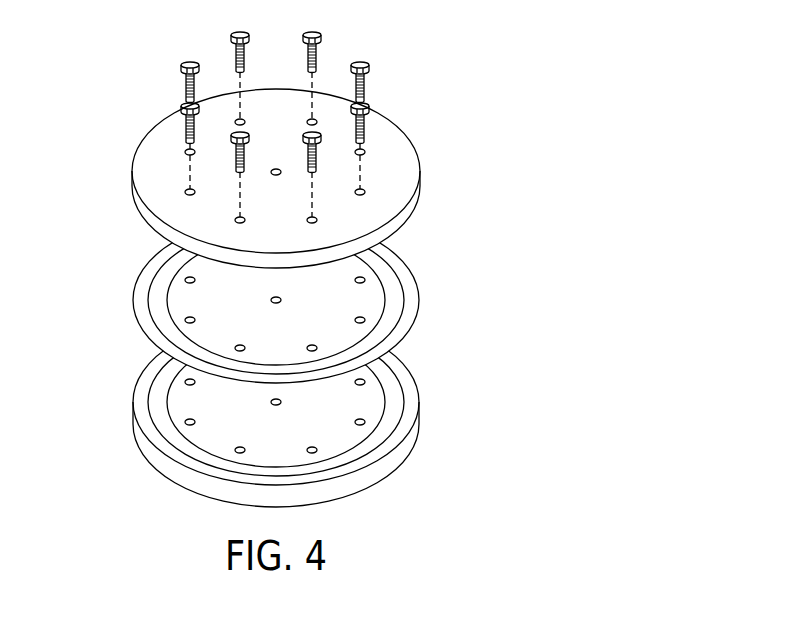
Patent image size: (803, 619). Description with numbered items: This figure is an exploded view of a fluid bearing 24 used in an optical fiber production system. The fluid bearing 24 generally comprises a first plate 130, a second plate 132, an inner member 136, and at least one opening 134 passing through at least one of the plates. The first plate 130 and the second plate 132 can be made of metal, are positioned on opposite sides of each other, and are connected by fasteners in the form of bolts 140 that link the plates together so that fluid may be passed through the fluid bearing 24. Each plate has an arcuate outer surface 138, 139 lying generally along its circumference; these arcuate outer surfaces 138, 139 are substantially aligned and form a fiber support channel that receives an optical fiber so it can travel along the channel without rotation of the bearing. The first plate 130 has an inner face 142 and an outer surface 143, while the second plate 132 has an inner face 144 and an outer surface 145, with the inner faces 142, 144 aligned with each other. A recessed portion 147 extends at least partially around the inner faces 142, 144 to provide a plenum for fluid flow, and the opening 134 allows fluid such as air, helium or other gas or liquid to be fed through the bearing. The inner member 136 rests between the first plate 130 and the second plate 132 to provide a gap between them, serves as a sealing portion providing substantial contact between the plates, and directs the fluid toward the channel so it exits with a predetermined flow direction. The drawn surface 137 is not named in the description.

The fluid bearing 24 is at (518, 130).
The first plate 130 is at (404, 123).
The second plate 132 is at (421, 446).
The opening 134 is at (275, 168).
The inner member 136 is at (421, 283).
The outer ring surface of intermediate plate 137 is at (140, 294).
The arcuate outer surface 138 is at (414, 203).
The arcuate outer surface 139 is at (134, 440).
The bolts 140 is at (321, 44).
The inner face 142 is at (138, 217).
The outer surface 143 is at (157, 140).
The inner face 144 is at (373, 393).
The outer surface 145 is at (371, 494).
The recessed portion 147 is at (158, 395).